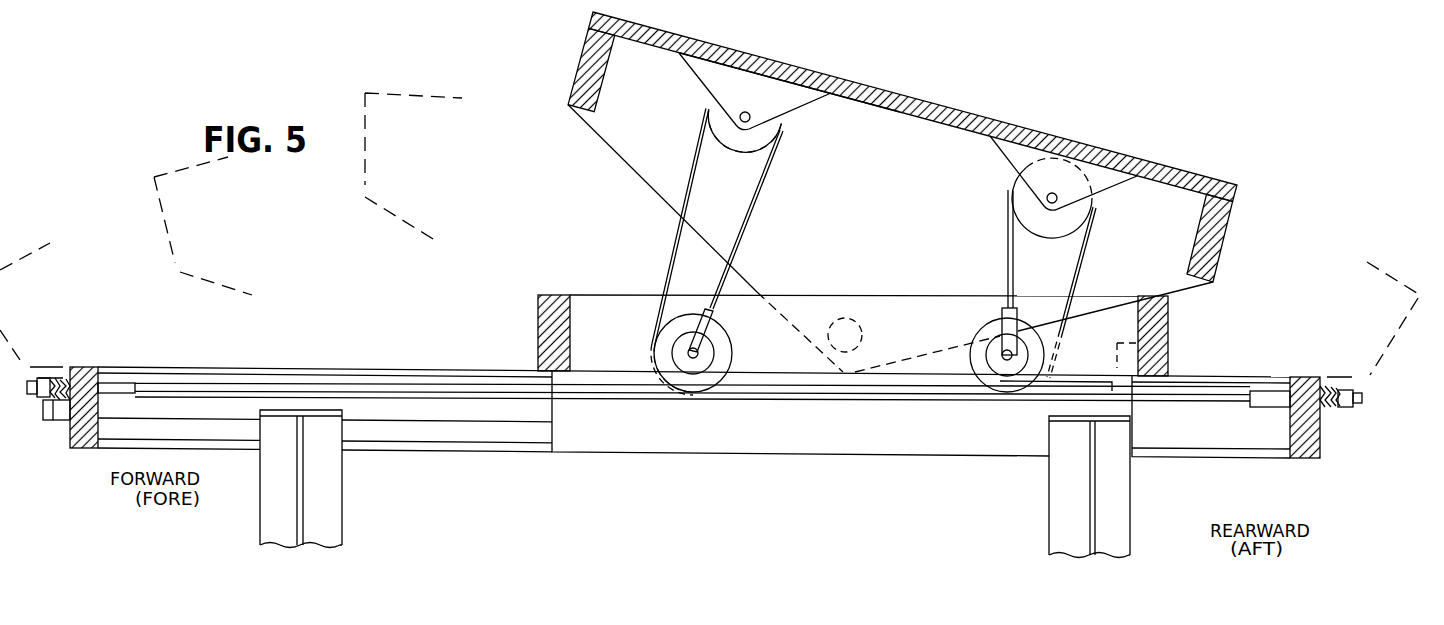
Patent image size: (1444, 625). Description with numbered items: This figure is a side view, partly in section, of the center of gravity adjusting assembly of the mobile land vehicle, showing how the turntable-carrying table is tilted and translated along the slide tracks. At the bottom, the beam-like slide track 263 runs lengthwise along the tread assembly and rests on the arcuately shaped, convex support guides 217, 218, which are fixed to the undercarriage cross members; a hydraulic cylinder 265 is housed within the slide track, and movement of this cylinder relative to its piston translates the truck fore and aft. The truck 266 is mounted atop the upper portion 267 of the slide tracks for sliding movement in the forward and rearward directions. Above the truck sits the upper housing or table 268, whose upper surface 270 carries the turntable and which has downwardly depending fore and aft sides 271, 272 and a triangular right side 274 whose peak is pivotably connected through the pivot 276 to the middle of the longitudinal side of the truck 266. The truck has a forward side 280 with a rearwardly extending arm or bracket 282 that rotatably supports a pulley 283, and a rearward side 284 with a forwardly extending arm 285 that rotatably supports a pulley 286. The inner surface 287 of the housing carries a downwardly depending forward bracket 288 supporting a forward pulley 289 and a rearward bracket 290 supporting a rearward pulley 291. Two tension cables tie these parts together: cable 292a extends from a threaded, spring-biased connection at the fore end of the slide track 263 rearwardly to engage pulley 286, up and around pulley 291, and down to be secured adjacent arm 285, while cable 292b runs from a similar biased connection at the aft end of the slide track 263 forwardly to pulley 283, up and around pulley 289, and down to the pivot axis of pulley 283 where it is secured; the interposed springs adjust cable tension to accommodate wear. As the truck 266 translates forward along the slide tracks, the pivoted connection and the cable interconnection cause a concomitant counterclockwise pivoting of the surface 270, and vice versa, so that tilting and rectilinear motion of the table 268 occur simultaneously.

The convex support guide 217 is at (328, 470).
The convex support guide 218 is at (1113, 492).
The slide track 263 is at (496, 428).
The hydraulic cylinder 265 is at (905, 432).
The truck 266 is at (1166, 365).
The upper portion of the slide tracks 267 is at (396, 366).
The upper housing or table 268 is at (1250, 183).
The upper surface 270 is at (942, 104).
The fore side 271 is at (585, 50).
The aft side 272 is at (1212, 236).
The right side 274 is at (665, 160).
The pivot 276 is at (863, 337).
The forward side of truck 280 is at (538, 310).
The arm or bracket 282 is at (612, 330).
The pulley 283 is at (700, 382).
The rearward side of truck 284 is at (1167, 327).
The arm 285 is at (1100, 353).
The pulley 286 is at (1000, 385).
The inner surface 287 is at (910, 108).
The forward bracket 288 is at (712, 66).
The forward pulley 289 is at (722, 122).
The rearward bracket 290 is at (1022, 156).
The rearward pulley 291 is at (1070, 226).
The tension cable 292a is at (1008, 257).
The tension cable 292b is at (745, 233).